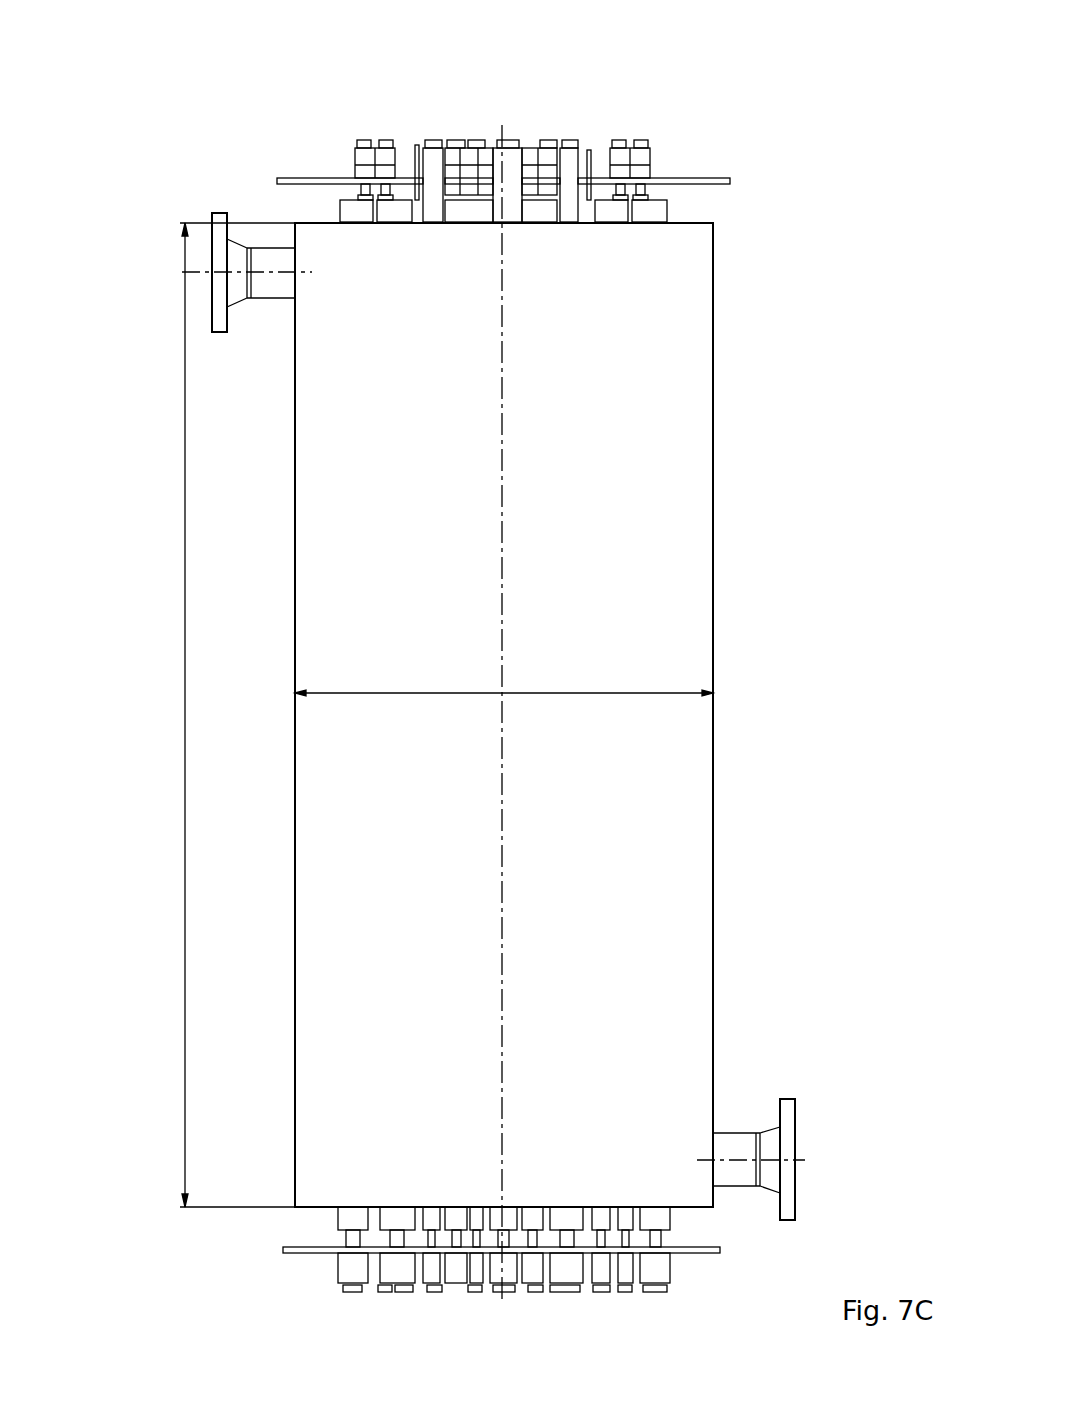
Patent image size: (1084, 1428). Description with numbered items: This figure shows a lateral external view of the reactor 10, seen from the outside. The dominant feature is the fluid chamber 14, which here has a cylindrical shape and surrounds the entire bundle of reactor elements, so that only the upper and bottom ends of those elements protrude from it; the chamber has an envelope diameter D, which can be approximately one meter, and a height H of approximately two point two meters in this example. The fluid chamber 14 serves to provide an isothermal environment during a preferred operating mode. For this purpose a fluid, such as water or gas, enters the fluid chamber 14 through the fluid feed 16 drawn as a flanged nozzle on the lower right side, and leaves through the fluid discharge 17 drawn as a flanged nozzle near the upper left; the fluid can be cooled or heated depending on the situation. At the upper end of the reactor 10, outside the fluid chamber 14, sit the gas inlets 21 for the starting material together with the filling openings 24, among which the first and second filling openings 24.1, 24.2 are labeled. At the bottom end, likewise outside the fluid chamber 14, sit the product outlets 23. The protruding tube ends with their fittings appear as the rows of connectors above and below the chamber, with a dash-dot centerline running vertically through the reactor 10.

The reactor 10 is at (96, 95).
The fluid chamber 14 is at (705, 872).
The fluid feed 16 is at (798, 1131).
The fluid discharge 17 is at (212, 213).
The gas inlet 21 is at (290, 178).
The product outlet 23 is at (283, 1250).
The filling openings 24 is at (524, 119).
The first filling opening 24.1 is at (616, 140).
The second filling opening 24.2 is at (398, 145).